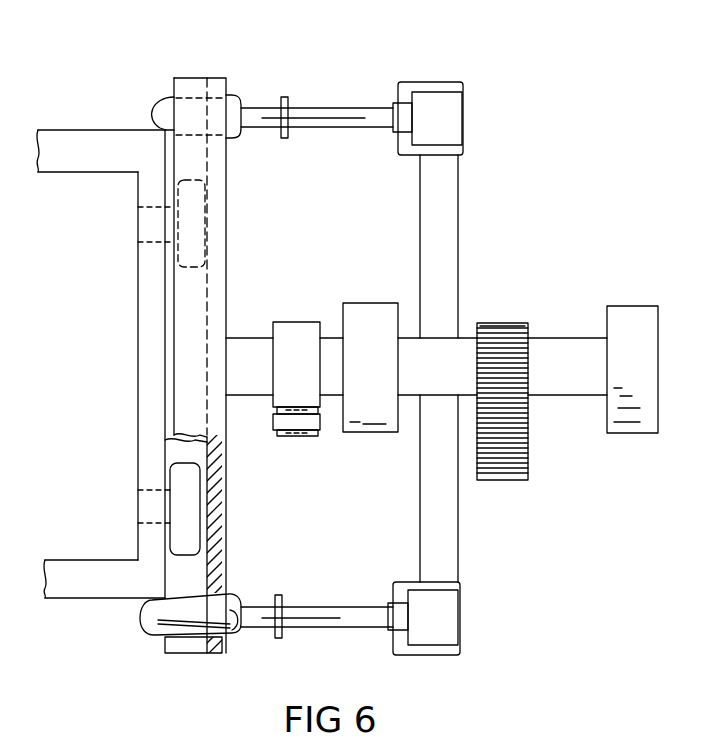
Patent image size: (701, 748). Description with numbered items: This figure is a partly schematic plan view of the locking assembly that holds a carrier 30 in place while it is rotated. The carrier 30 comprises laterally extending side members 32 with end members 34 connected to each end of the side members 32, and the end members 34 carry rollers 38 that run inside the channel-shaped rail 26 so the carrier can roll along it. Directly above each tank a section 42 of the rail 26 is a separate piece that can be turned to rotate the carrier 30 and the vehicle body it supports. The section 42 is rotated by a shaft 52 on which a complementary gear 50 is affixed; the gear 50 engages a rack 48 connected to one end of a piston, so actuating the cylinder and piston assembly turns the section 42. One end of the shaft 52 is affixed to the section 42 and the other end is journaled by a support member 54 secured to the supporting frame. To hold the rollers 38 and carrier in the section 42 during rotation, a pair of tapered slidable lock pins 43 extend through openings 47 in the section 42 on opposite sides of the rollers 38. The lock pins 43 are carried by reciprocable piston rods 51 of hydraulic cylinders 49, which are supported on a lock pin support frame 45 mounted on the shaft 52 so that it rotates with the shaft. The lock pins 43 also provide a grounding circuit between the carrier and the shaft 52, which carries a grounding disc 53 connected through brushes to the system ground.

The channel-shaped rail 26 is at (226, 481).
The carrier 30 is at (70, 172).
The side member 32 is at (72, 138).
The end member 34 is at (152, 262).
The roller 38 is at (214, 205).
The rail section 42 is at (191, 80).
The lock pin 43 is at (234, 95).
The lock pin support frame 45 is at (444, 234).
The opening 47 is at (236, 634).
The rack 48 is at (503, 470).
The hydraulic cylinder 49 is at (442, 100).
The gear 50 is at (505, 336).
The piston rod 51 is at (325, 110).
The shaft 52 is at (250, 345).
The grounding disc 53 is at (296, 336).
The support member 54 is at (368, 410).